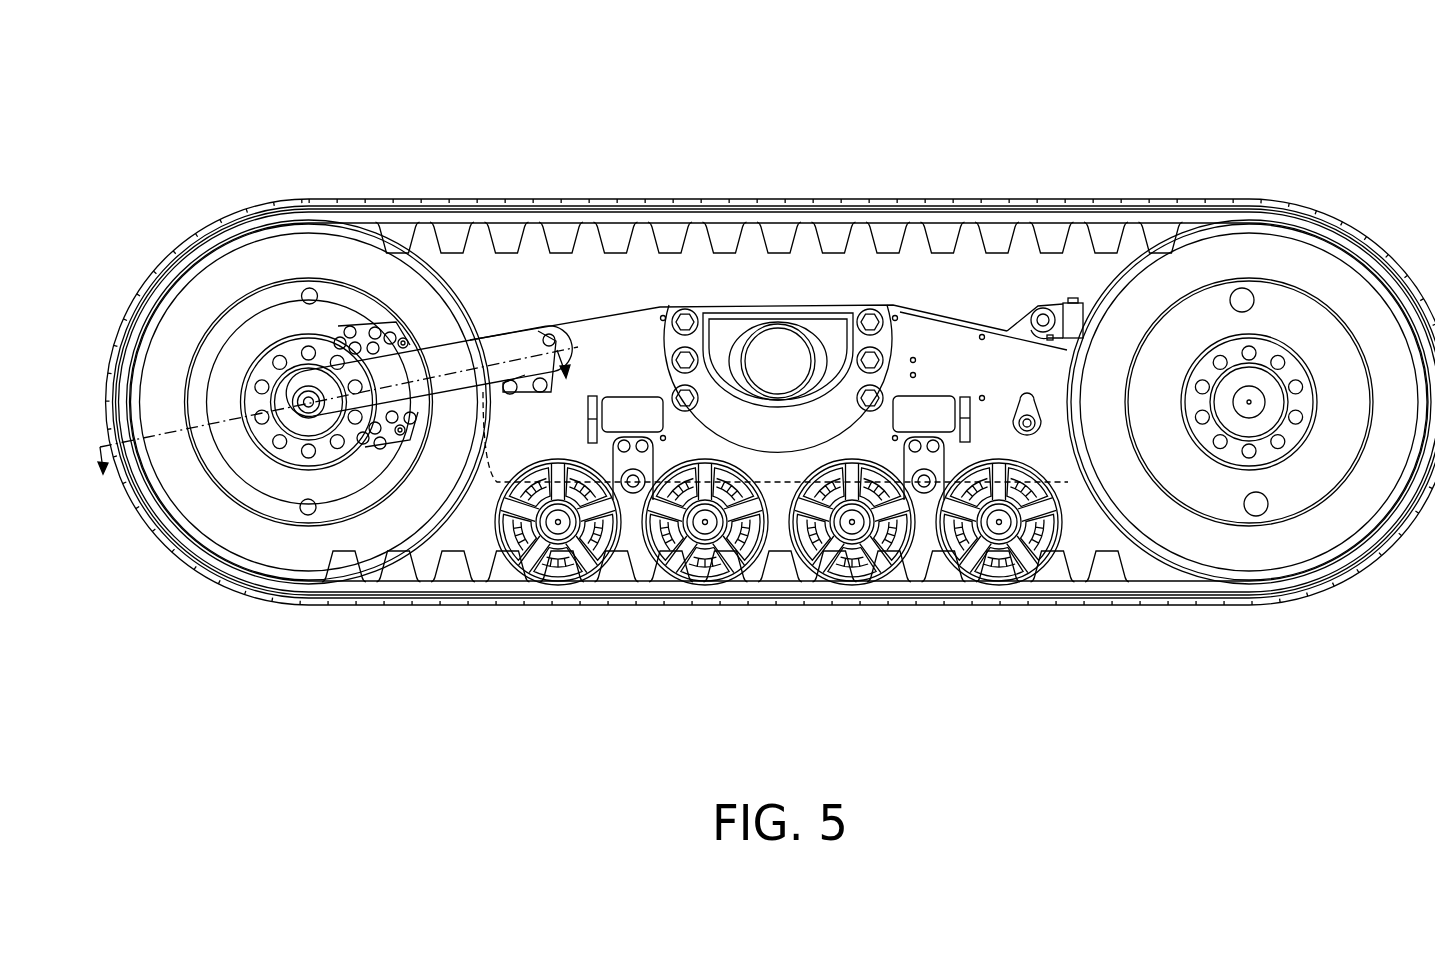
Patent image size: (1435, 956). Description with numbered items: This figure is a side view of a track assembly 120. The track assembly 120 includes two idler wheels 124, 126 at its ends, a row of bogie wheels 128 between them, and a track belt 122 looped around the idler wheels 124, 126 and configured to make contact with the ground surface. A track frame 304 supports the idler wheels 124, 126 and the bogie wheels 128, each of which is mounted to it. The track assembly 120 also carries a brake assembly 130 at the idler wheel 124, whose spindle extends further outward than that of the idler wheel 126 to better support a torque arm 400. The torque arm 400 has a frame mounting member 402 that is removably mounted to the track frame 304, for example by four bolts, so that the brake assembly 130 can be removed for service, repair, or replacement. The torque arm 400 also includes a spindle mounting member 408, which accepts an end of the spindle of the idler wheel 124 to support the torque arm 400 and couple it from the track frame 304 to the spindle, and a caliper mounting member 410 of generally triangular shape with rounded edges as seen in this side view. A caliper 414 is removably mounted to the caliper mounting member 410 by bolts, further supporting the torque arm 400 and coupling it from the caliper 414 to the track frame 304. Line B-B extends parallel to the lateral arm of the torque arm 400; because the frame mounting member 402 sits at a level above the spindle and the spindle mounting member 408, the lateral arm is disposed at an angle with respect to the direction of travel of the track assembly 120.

The track assembly 120 is at (822, 162).
The track belt 122 is at (1000, 200).
The idler wheel 124 is at (189, 487).
The idler wheel 126 is at (1306, 525).
The bogie wheels 128 is at (570, 582).
The brake assembly 130 is at (302, 325).
The track frame 304 is at (650, 306).
The torque arm 400 is at (505, 322).
The frame mounting member 402 is at (549, 370).
The spindle mounting member 408 is at (308, 412).
The caliper mounting member 410 is at (346, 425).
The caliper 414 is at (383, 330).